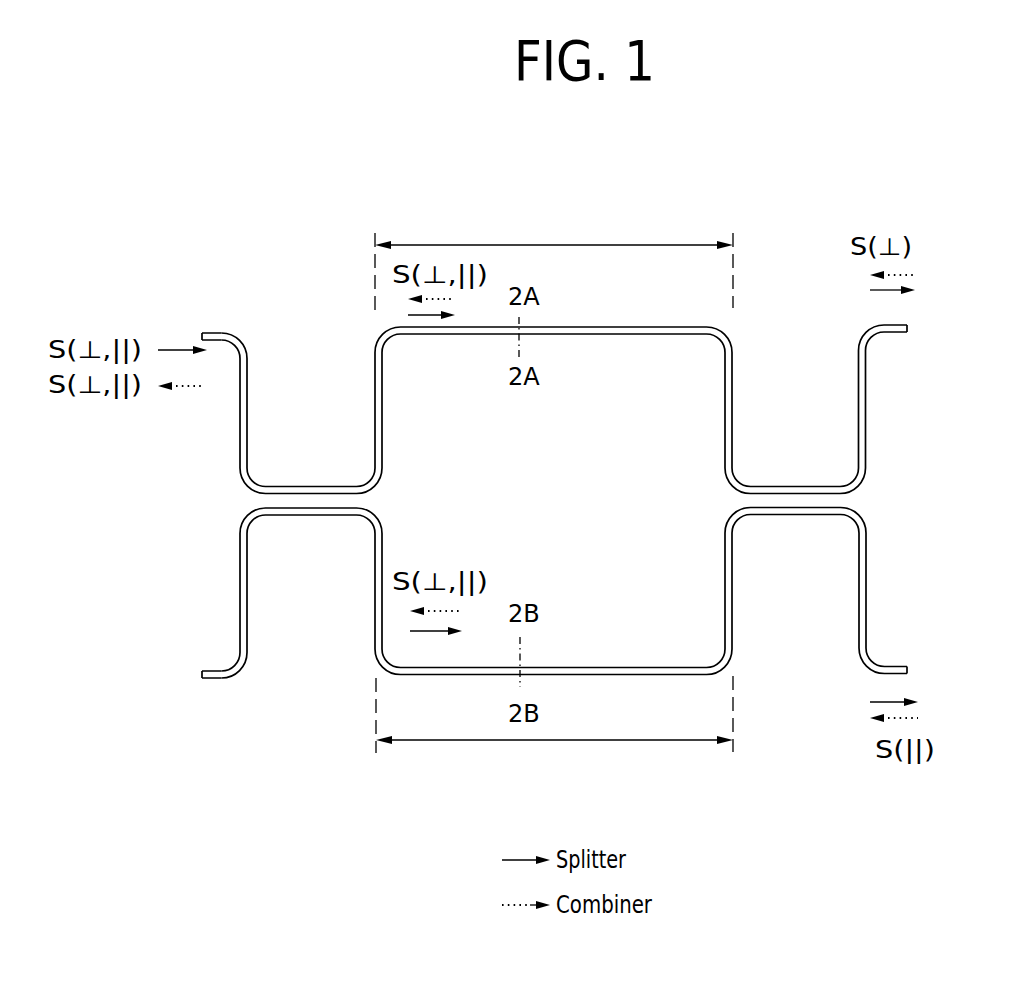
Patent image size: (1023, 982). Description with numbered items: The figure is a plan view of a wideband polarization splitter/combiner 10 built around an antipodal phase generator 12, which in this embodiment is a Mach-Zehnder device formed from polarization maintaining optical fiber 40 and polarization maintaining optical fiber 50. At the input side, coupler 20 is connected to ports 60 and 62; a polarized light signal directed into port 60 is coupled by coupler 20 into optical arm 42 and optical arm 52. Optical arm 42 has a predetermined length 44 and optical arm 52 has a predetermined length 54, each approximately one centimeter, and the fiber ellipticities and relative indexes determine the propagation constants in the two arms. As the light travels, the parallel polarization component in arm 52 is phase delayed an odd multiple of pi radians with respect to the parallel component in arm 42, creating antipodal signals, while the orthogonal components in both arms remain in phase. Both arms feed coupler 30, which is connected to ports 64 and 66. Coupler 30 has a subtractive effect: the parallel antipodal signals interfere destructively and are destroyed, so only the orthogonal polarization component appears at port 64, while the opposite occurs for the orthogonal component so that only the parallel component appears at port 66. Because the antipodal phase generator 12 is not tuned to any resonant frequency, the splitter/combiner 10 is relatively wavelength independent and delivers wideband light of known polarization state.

The wideband polarization splitter/combiner 10 is at (893, 191).
The antipodal phase generator 12 is at (768, 288).
The coupler 20 is at (298, 487).
The coupler 30 is at (784, 486).
The polarization maintaining optical fiber 40 is at (222, 333).
The optical arm 42 is at (601, 335).
The predetermined length 44 is at (585, 245).
The polarization maintaining optical fiber 50 is at (238, 678).
The optical arm 52 is at (612, 667).
The predetermined length 54 is at (603, 741).
The port 60 is at (200, 334).
The port 62 is at (201, 674).
The port 64 is at (908, 328).
The port 66 is at (907, 671).